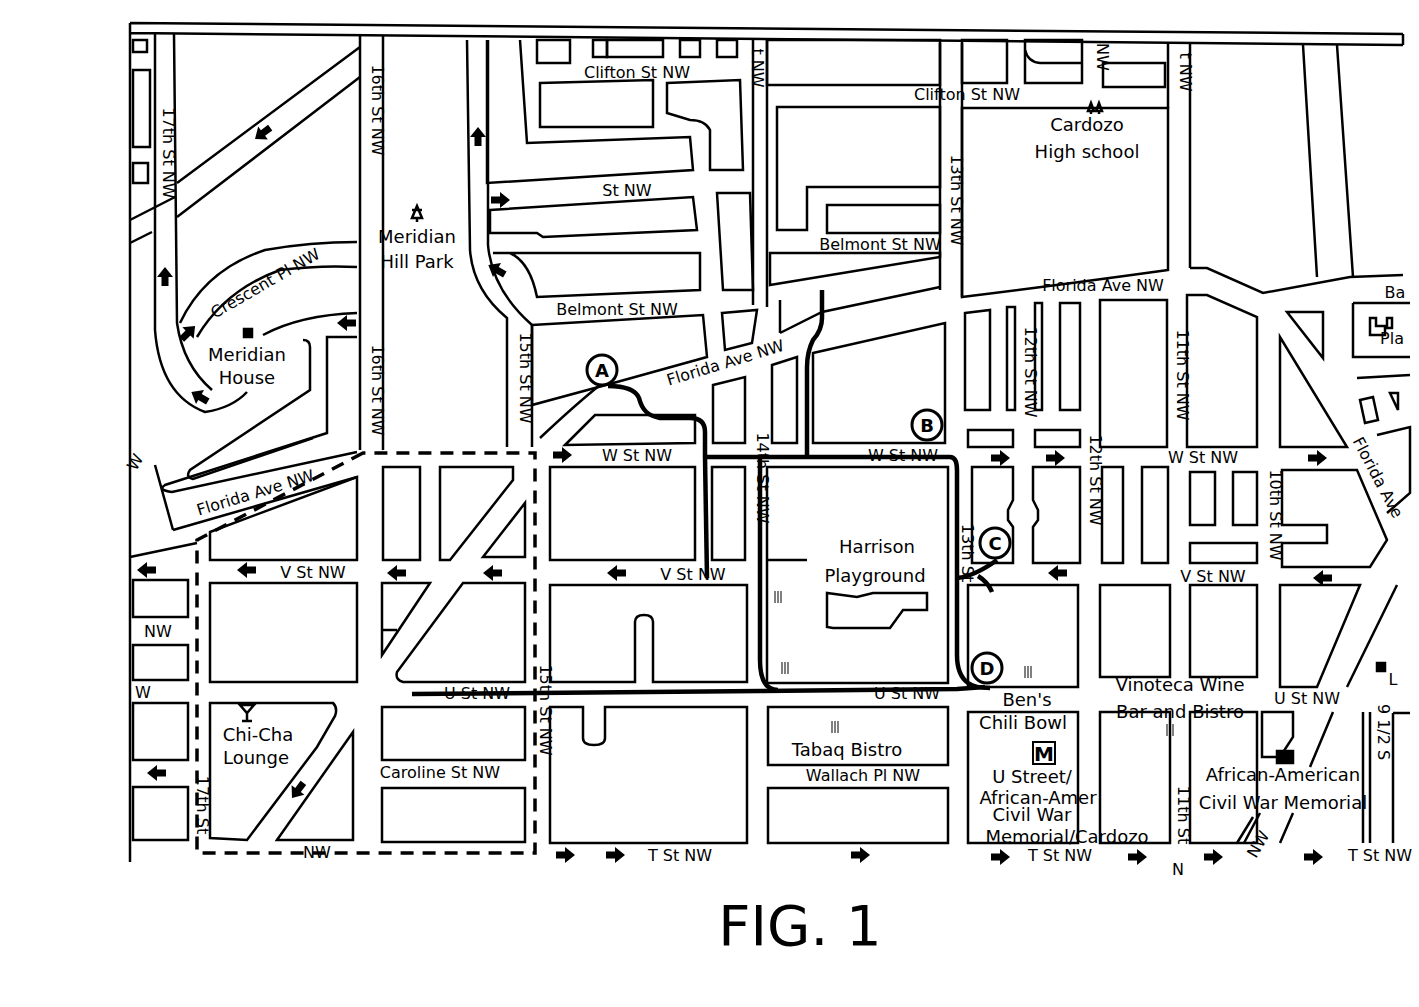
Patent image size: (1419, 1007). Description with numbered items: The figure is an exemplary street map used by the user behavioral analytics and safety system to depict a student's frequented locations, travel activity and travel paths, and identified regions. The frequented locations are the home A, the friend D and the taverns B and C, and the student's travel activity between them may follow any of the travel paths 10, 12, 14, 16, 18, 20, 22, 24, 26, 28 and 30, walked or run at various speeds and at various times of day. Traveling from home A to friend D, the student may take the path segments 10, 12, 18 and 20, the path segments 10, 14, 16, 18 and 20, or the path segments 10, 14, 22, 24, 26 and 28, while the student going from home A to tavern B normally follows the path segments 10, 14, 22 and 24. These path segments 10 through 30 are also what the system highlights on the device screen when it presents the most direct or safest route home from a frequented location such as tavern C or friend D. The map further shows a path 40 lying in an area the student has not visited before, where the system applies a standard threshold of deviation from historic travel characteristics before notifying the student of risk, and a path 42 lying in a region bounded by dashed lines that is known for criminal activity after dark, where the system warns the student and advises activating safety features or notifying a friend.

The travel path 10 is at (652, 420).
The travel path 12 is at (703, 523).
The travel path 14 is at (735, 446).
The travel path 16 is at (763, 523).
The travel path 18 is at (757, 622).
The travel path 20 is at (857, 687).
The travel path 22 is at (790, 446).
The travel path 24 is at (850, 447).
The travel path 26 is at (953, 500).
The travel path 28 is at (947, 623).
The travel path 30 is at (992, 590).
The path 40 is at (817, 370).
The path 42 is at (418, 693).